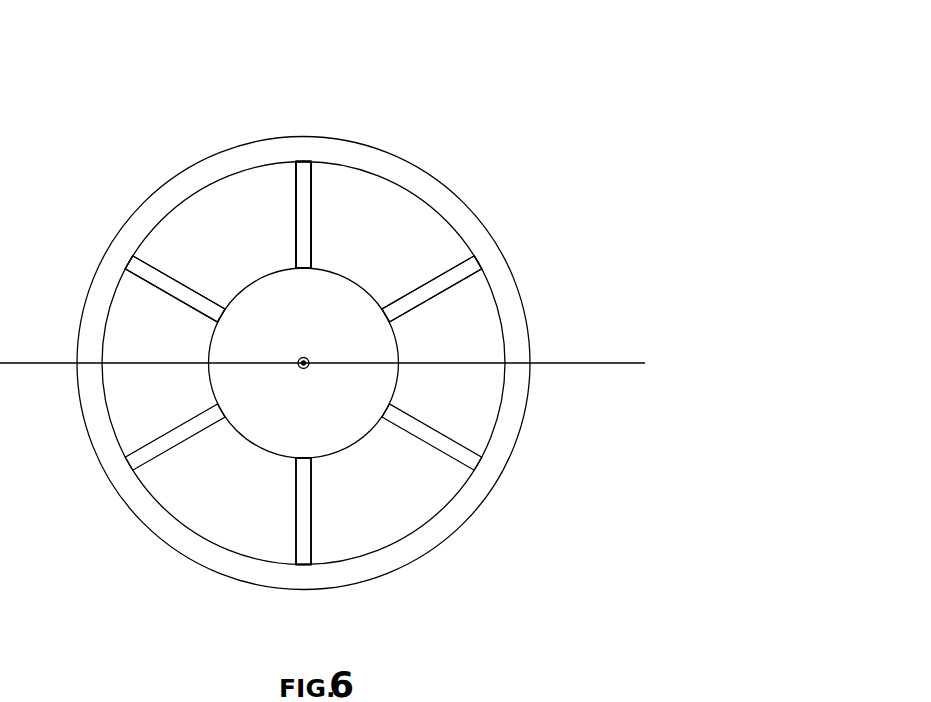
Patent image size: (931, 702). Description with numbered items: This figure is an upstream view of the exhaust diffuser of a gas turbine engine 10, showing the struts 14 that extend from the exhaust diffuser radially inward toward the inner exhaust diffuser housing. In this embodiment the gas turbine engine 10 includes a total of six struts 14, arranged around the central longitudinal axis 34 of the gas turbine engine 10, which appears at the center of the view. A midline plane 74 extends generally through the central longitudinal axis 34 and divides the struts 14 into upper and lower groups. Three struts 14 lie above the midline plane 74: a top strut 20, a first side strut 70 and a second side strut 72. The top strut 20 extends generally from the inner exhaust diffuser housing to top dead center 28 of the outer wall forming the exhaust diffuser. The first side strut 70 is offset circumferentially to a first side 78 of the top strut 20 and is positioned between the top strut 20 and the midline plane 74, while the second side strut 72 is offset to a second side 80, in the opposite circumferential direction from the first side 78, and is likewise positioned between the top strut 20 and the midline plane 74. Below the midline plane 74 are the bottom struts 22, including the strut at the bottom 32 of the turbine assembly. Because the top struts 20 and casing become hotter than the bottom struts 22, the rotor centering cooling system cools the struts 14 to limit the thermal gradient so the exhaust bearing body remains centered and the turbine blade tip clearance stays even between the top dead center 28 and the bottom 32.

The gas turbine engine 10 is at (489, 80).
The struts 14 is at (303, 193).
The top strut 20 is at (311, 193).
The bottom strut 22 is at (300, 509).
The top dead center 28 is at (295, 163).
The bottom 32 is at (306, 567).
The central longitudinal axis 34 is at (303, 370).
The first side strut 70 is at (450, 268).
The second side strut 72 is at (156, 283).
The midline plane 74 is at (573, 363).
The first side 78 is at (311, 226).
The second side 80 is at (296, 235).